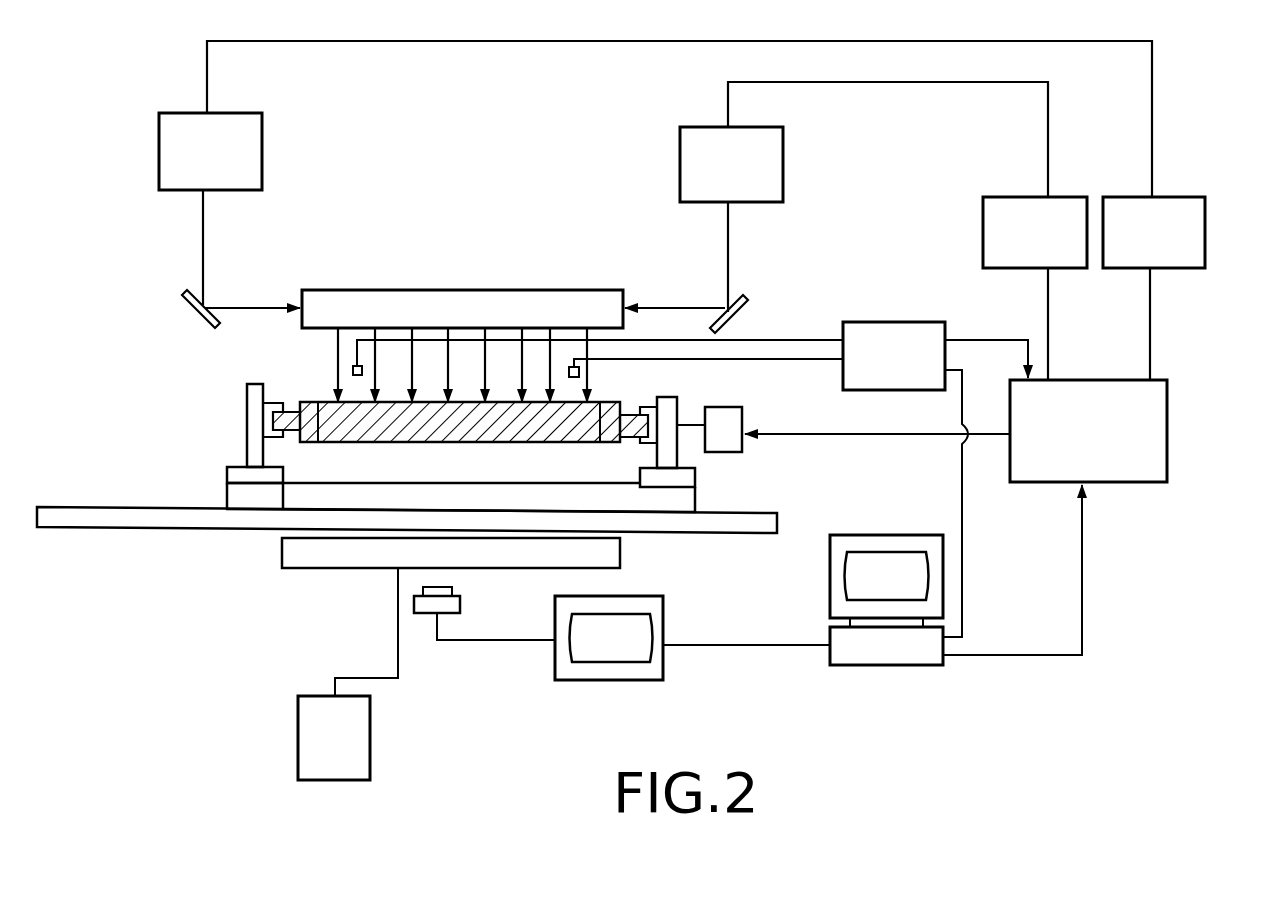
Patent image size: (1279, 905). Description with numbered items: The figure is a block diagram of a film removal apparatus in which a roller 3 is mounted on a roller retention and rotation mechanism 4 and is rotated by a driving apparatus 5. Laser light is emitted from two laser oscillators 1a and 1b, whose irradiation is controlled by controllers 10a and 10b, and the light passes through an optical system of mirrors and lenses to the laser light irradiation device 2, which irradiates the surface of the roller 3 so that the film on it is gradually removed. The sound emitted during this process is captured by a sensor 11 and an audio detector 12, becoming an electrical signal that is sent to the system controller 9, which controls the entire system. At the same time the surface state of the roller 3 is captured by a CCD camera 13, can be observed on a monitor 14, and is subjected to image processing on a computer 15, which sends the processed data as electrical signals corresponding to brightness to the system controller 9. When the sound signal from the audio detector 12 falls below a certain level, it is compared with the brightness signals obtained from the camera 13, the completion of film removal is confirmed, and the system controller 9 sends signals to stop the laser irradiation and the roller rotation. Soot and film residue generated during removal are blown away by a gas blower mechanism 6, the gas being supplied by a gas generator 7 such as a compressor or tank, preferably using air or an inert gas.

The laser oscillator 1a is at (262, 146).
The laser oscillator 1b is at (778, 162).
The laser light irradiation device 2 is at (392, 290).
The roller 3 is at (462, 442).
The roller retention and rotation mechanism 4 is at (247, 415).
The driving apparatus 5 is at (742, 416).
The gas blower mechanism 6 is at (282, 553).
The gas generator 7 is at (370, 752).
The system controller 9 is at (1167, 454).
The controller 10a is at (1205, 237).
The controller 10b is at (983, 232).
The sensor 11 is at (580, 370).
The audio detector 12 is at (866, 322).
The CCD camera 13 is at (460, 602).
The monitor 14 is at (663, 608).
The computer 15 is at (884, 665).